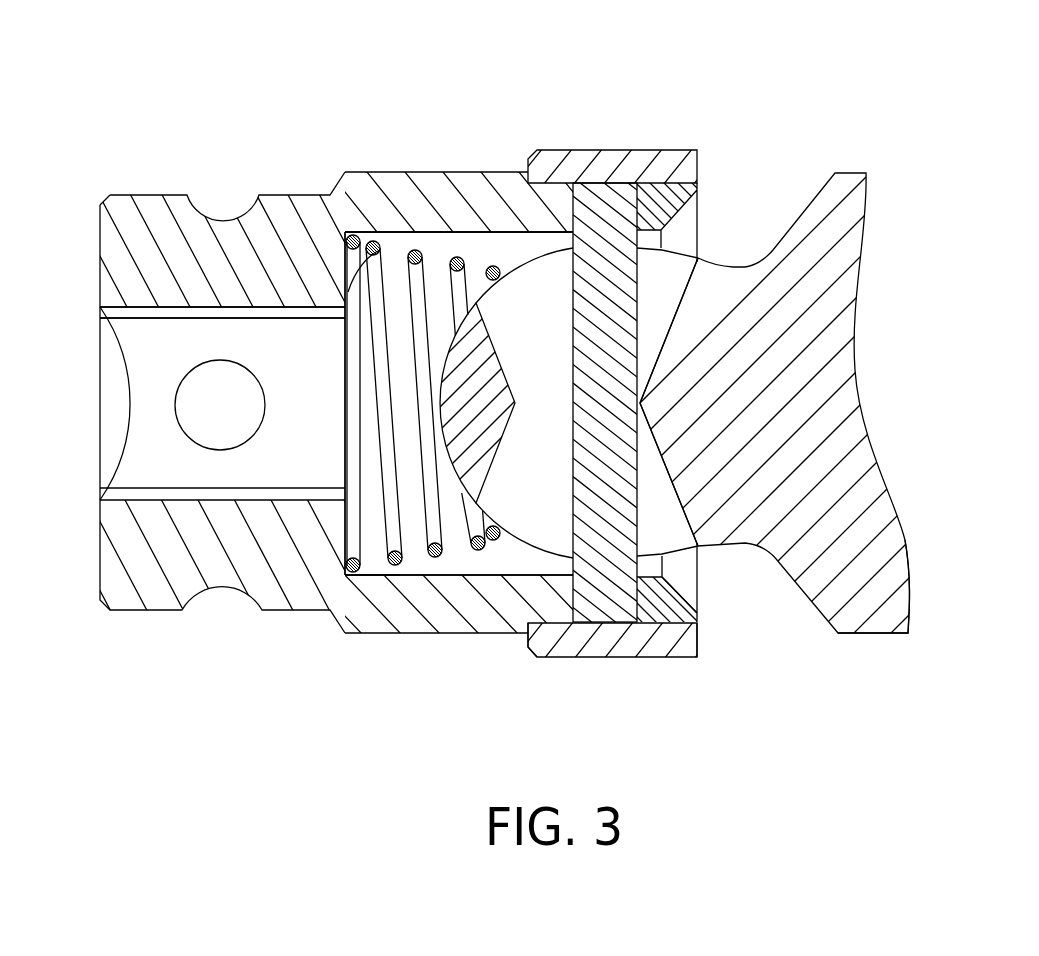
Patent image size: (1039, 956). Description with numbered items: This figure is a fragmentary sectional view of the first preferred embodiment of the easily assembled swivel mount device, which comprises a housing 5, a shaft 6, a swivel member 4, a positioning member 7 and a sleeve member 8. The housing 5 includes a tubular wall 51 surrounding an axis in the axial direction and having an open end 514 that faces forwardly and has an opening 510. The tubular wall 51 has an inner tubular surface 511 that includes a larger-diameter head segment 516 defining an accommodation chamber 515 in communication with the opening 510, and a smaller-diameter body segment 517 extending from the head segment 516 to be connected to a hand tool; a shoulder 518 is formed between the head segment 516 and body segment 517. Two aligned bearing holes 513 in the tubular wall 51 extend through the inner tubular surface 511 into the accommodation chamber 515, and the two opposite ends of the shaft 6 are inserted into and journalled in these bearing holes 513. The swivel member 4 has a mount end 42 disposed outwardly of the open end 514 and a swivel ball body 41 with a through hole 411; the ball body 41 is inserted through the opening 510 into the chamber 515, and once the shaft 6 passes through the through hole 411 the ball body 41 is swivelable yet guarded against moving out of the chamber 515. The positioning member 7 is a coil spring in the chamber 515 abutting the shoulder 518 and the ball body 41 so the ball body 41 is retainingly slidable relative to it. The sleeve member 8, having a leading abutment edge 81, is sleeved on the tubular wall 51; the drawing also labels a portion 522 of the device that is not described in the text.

The swivel member 4 is at (880, 660).
The swivel ball body 41 is at (465, 441).
The through hole 411 is at (667, 280).
The mount end 42 is at (902, 618).
The housing 5 is at (504, 150).
The tubular wall 51 is at (124, 177).
The opening 510 is at (687, 570).
The inner tubular surface 511 is at (371, 561).
The bearing holes 513 is at (605, 180).
The open end 514 is at (698, 190).
The accommodation chamber 515 is at (468, 247).
The head segment 516 is at (427, 243).
The body segment 517 is at (190, 312).
The shoulder 518 is at (375, 240).
The outer edge 522 is at (703, 660).
The shaft 6 is at (597, 614).
The positioning member 7 is at (422, 413).
The sleeve member 8 is at (736, 639).
The leading abutment edge 81 is at (528, 632).